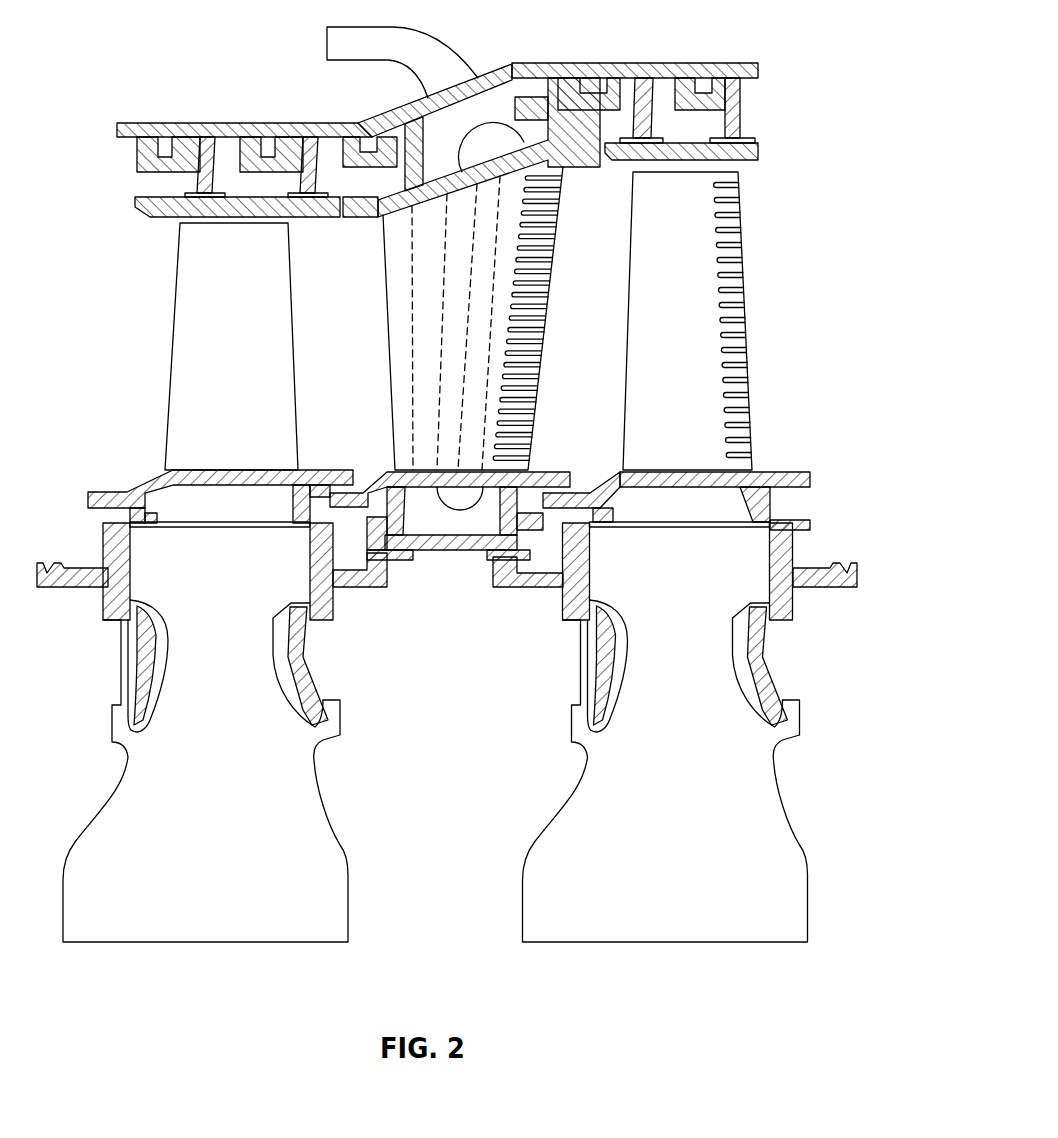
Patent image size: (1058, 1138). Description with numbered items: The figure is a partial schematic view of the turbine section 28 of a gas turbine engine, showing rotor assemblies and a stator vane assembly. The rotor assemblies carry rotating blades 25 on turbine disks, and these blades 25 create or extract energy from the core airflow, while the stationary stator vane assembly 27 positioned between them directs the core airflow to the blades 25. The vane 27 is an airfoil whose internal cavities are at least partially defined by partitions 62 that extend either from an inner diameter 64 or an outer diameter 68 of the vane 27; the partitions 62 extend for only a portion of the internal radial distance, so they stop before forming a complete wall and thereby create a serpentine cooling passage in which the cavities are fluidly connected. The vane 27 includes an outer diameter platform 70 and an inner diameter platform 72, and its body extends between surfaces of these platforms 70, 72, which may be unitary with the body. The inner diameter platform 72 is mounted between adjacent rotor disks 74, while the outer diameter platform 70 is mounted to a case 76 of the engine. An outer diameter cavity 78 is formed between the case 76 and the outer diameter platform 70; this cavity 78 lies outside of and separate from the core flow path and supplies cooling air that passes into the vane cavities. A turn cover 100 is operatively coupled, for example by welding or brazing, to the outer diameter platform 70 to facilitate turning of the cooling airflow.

The turbine section 28 is at (146, 58).
The rotating blades 25 is at (143, 440).
The case 76 is at (272, 122).
The outer diameter cavity 78 is at (448, 132).
The turn cover 100 is at (488, 147).
The outer diameter platform 70 is at (582, 160).
The stator vane assembly 27 is at (570, 226).
The outer diameter 68 is at (463, 187).
The partitions 62 is at (412, 332).
The inner diameter 64 is at (478, 470).
The inner diameter platform 72 is at (413, 475).
The rotor disks 74 is at (740, 547).